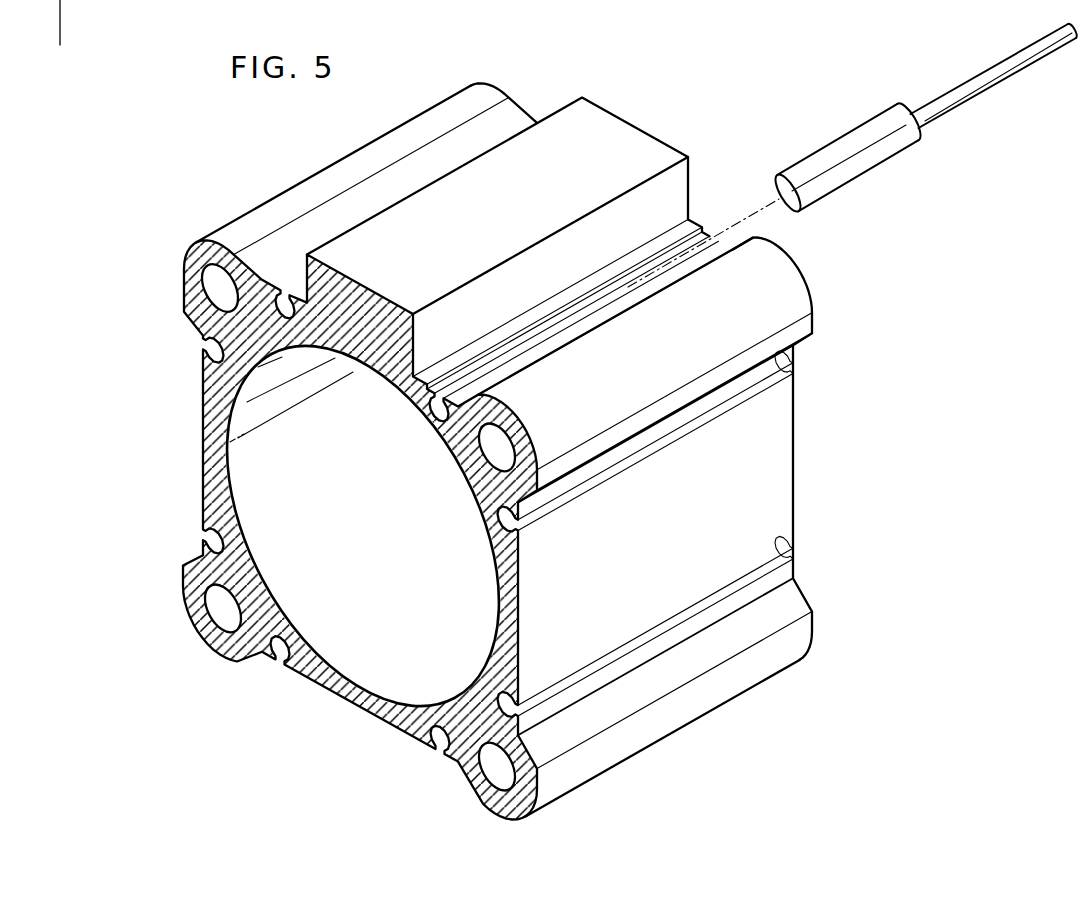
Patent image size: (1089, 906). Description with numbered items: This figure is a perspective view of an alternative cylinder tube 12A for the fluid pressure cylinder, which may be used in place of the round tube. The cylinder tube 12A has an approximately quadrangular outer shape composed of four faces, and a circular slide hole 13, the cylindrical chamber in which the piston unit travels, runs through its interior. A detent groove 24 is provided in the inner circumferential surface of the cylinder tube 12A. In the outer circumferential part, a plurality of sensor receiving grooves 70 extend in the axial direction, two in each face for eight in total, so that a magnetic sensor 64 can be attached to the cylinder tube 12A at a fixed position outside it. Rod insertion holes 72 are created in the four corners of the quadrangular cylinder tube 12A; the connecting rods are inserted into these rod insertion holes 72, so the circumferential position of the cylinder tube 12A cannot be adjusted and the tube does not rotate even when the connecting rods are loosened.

The cylinder tube 12A is at (236, 217).
The slide hole 13 is at (248, 473).
The detent groove 24 is at (360, 362).
The magnetic sensor 64 is at (847, 178).
The sensor receiving grooves 70 is at (279, 313).
The rod insertion holes 72 is at (206, 288).